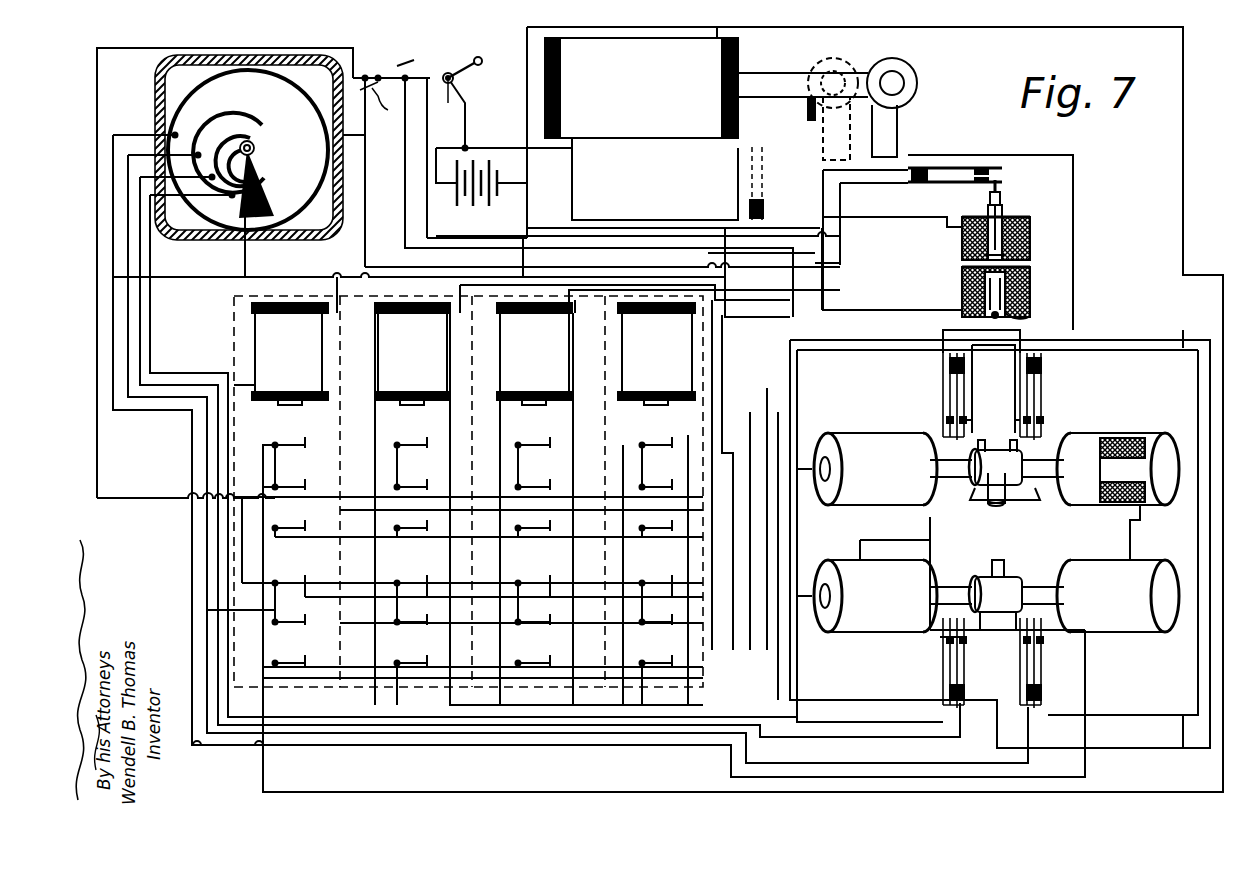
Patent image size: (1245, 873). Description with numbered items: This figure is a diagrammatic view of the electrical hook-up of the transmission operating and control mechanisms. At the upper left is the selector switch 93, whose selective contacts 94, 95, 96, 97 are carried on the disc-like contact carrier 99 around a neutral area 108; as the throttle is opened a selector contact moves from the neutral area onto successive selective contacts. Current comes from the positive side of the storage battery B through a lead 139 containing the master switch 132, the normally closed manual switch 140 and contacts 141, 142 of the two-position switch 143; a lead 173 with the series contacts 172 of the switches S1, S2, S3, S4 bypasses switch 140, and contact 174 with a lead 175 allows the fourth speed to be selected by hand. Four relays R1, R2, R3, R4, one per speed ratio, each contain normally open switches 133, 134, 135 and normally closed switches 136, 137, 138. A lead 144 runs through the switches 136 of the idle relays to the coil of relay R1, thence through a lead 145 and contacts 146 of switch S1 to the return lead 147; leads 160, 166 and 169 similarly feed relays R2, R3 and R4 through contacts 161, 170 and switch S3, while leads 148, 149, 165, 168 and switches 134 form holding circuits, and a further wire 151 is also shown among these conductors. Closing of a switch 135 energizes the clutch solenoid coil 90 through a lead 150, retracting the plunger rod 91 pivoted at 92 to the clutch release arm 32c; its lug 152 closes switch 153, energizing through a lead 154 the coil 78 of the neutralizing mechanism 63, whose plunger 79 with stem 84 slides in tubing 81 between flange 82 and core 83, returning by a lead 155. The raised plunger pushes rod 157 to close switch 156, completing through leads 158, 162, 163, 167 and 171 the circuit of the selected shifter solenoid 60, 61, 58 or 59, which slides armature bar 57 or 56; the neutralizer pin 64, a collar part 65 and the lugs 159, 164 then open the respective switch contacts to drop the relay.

The selector switch 93 is at (153, 97).
The selective contact carrier 99 is at (302, 92).
The fourth speed selective contact 97 is at (266, 103).
The third speed selective contact 96 is at (228, 153).
The second speed selective contact 95 is at (227, 161).
The first speed selective contact 94 is at (238, 168).
The neutral area 108 is at (320, 128).
The lead 169 is at (192, 478).
The lead 160 is at (207, 585).
The lead 166 is at (193, 550).
The lead 144 is at (423, 458).
The lead 148 is at (312, 47).
The lead 139 is at (268, 245).
The lead 175 is at (366, 87).
The lead 173 is at (383, 108).
The manual switch 140 is at (420, 70).
The switch contact 142 is at (362, 72).
The switch contact 141 is at (378, 72).
The two-position switch 143 is at (380, 76).
The switch contact 174 is at (380, 103).
The master switch 132 is at (458, 82).
The storage battery B is at (499, 192).
The clutch operating solenoid coil 90 is at (641, 82).
The lead 150 is at (628, 30).
The lead 154 is at (650, 150).
The lead 147 is at (530, 218).
The lead 158 is at (1008, 28).
The conductor 151 is at (522, 256).
The lead 145 is at (337, 286).
The plunger rod 91 is at (781, 72).
The pivot 92 is at (905, 82).
The clutch release arm 32c is at (900, 125).
The switch-operating lug 152 is at (833, 109).
The switch 153 is at (765, 165).
The switch 156 is at (1032, 170).
The neutralizing mechanism 63 is at (958, 258).
The core 83 is at (1030, 226).
The solenoid coil 78 is at (1030, 248).
The stem 84 is at (970, 300).
The non-magnetic tubing 81 is at (1032, 270).
The plunger 79 is at (1006, 285).
The inturned annular flange 82 is at (1032, 312).
The lead 155 is at (888, 307).
The relay switch mechanism R1 is at (290, 354).
The relay switch mechanism R2 is at (412, 354).
The relay switch mechanism R3 is at (534, 354).
The relay switch mechanism R4 is at (656, 354).
The lead 163 is at (388, 428).
The lead 167 is at (806, 545).
The lead 162 is at (741, 565).
The lead 165 is at (504, 509).
The lead 168 is at (183, 633).
The lead 171 is at (765, 571).
The switch contacts 172 is at (701, 539).
The lead 149 is at (281, 466).
The normally open switch 133 is at (473, 439).
The normally open switch 134 is at (473, 481).
The normally open switch 135 is at (473, 522).
The normally closed switch 136 is at (473, 577).
The normally closed switch 137 is at (473, 616).
The normally closed switch 138 is at (473, 657).
The solenoid coil 61 is at (875, 469).
The solenoid coil 60 is at (1118, 469).
The push rod 157 is at (1090, 469).
The solenoid coil 59 is at (875, 596).
The solenoid coil 58 is at (1118, 596).
The solenoid armature bar 57 is at (1050, 488).
The solenoid armature bar 56 is at (1038, 590).
The rigid lug 159 is at (995, 467).
The switch-operating lug 164 is at (997, 438).
The neutralizer pin 64 is at (985, 492).
The shift collar 65 is at (990, 564).
The switch S1 is at (1050, 392).
The switch S2 is at (940, 396).
The switch S3 is at (1048, 660).
The switch S4 is at (940, 666).
The switch contacts 161 is at (968, 420).
The switch contacts 146 is at (1002, 423).
The switch contacts 170 is at (950, 653).